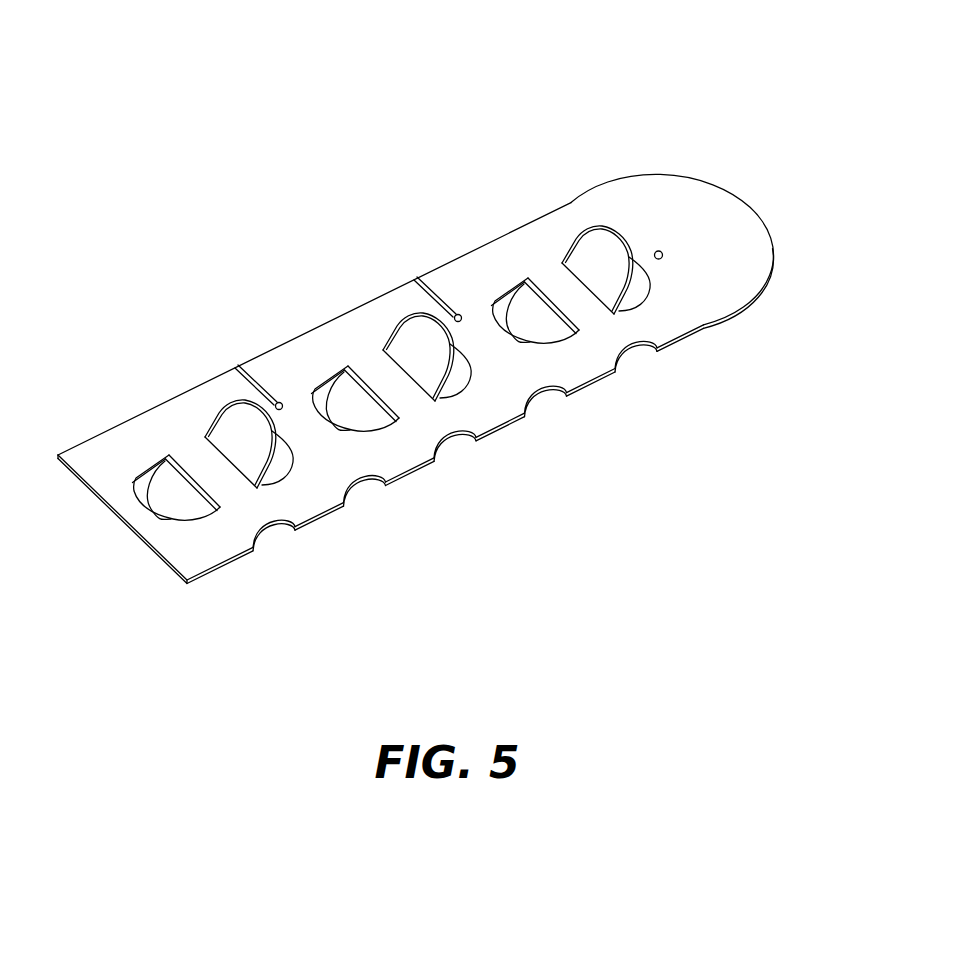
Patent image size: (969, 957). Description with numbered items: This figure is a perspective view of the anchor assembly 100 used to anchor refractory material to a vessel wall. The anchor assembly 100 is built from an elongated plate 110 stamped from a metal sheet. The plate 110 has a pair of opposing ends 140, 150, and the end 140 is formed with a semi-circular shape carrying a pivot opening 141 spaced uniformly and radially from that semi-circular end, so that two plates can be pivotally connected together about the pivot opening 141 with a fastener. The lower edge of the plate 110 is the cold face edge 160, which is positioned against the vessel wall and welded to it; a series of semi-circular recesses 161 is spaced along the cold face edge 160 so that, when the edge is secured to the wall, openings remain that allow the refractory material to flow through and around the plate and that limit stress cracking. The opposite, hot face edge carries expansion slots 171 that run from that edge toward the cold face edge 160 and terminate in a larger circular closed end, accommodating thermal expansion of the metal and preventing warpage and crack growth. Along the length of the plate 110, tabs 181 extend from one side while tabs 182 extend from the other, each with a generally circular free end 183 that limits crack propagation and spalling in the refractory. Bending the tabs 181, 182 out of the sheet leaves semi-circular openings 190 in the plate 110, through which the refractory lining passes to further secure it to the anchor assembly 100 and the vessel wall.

The anchor assembly 100 is at (624, 122).
The elongated plate 110 is at (360, 318).
The end 140 is at (741, 195).
The pivot opening 141 is at (663, 255).
The end 150 is at (94, 493).
The cold face edge 160 is at (221, 572).
The recess 161 is at (267, 532).
The expansion slot 171 is at (260, 373).
The tab 181 is at (178, 508).
The tab 182 is at (223, 432).
The free end 183 is at (455, 358).
The opening 190 is at (147, 483).